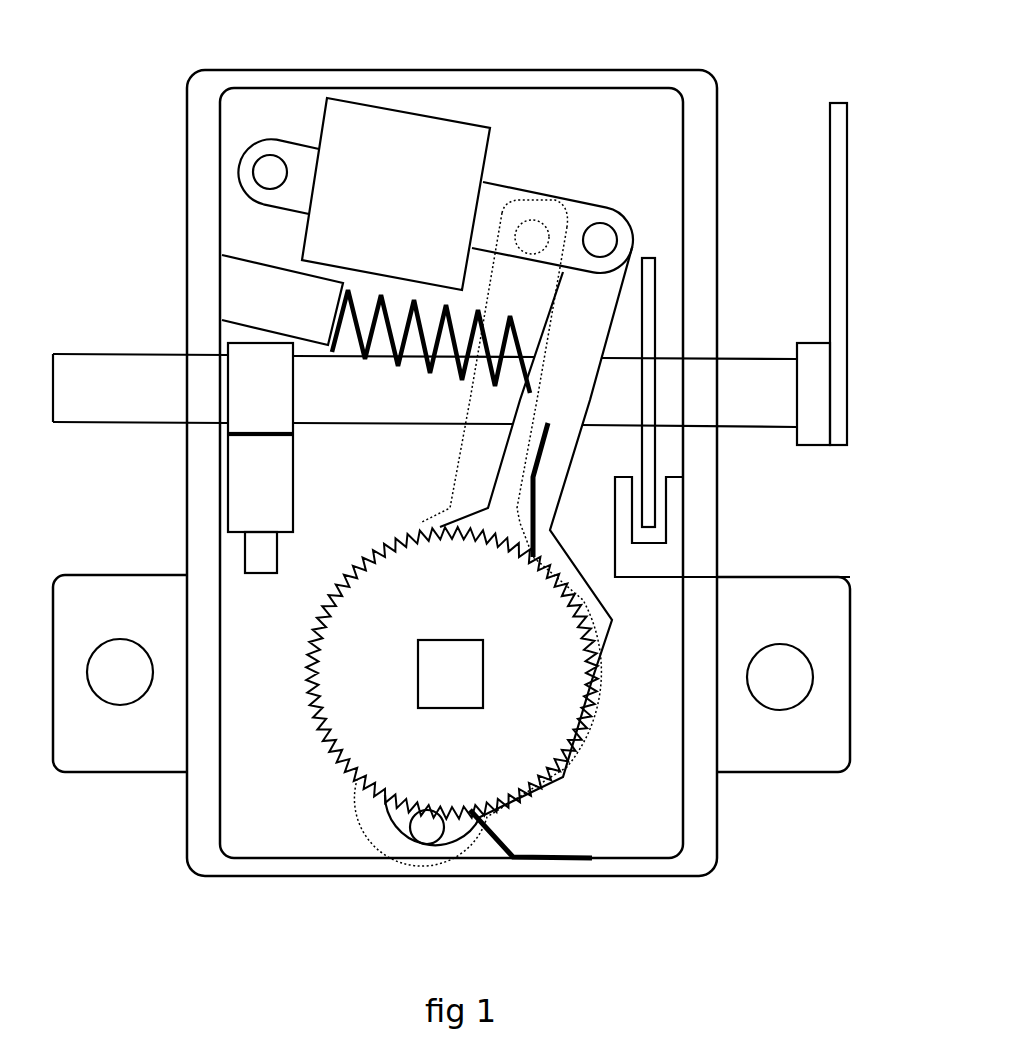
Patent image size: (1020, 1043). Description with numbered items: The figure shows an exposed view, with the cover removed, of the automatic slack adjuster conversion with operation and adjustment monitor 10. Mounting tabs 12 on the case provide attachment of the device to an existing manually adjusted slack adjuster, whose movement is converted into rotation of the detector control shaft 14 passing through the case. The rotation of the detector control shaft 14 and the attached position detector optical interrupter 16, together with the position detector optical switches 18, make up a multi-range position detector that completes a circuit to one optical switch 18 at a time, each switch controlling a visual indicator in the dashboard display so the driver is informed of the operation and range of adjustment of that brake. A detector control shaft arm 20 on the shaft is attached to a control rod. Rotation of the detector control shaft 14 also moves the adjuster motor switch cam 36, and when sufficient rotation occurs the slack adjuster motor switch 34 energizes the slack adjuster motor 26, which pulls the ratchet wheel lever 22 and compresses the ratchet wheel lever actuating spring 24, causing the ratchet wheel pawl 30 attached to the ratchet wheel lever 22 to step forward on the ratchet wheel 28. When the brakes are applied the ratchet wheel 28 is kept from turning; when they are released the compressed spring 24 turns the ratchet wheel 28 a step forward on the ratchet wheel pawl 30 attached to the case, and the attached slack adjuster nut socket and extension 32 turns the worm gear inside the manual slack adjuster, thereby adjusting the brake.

The automatic slack adjuster conversion with operation and adjustment monitor 10 is at (443, 70).
The mounting tabs 12 is at (155, 737).
The detector control shaft 14 is at (152, 353).
The position detector optical interrupter 16 is at (648, 330).
The position detector optical switches 18 is at (667, 550).
The detector control shaft arm 20 is at (845, 103).
The ratchet wheel lever 22 is at (588, 330).
The ratchet wheel lever actuating spring 24 is at (375, 300).
The slack adjuster motor 26 is at (490, 137).
The ratchet wheel 28 is at (367, 727).
The ratchet wheel pawl 30 is at (535, 502).
The slack adjuster nut socket and extension 32 is at (447, 683).
The slack adjuster motor switch 34 is at (257, 487).
The adjuster motor switch cam 36 is at (250, 360).